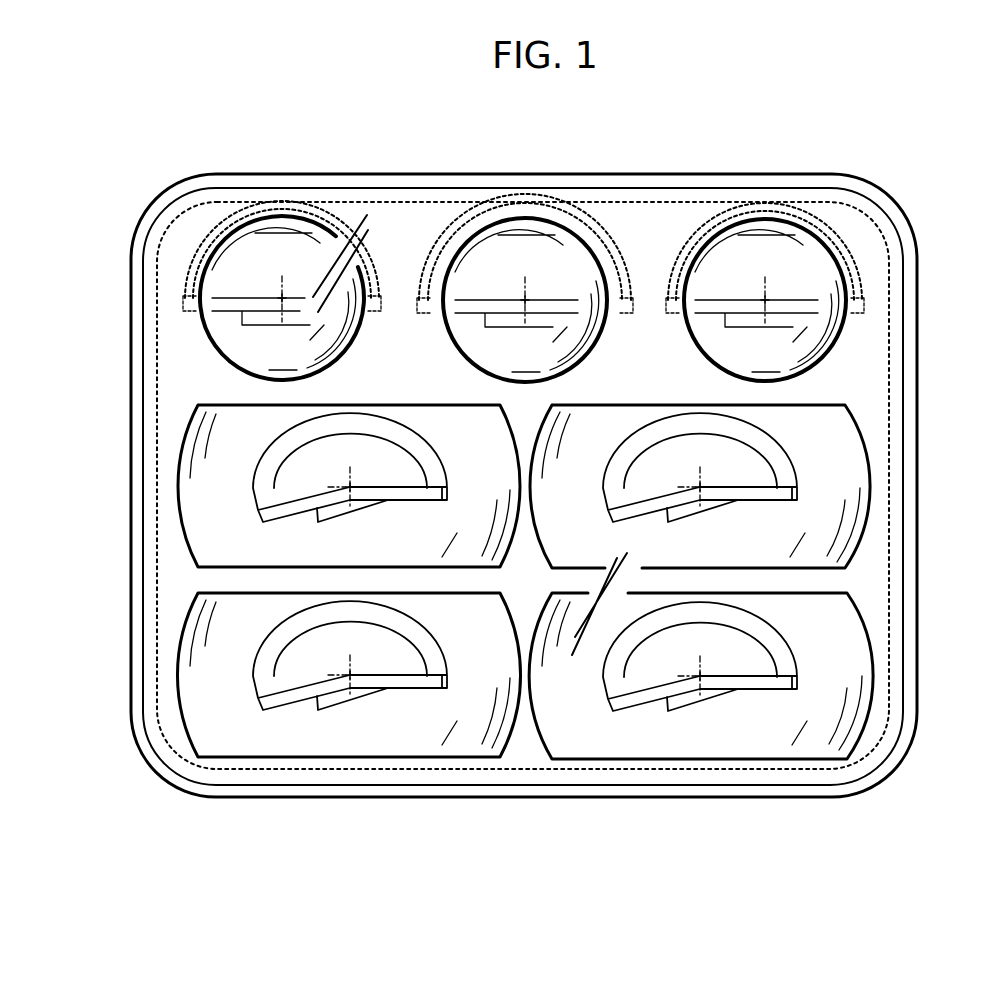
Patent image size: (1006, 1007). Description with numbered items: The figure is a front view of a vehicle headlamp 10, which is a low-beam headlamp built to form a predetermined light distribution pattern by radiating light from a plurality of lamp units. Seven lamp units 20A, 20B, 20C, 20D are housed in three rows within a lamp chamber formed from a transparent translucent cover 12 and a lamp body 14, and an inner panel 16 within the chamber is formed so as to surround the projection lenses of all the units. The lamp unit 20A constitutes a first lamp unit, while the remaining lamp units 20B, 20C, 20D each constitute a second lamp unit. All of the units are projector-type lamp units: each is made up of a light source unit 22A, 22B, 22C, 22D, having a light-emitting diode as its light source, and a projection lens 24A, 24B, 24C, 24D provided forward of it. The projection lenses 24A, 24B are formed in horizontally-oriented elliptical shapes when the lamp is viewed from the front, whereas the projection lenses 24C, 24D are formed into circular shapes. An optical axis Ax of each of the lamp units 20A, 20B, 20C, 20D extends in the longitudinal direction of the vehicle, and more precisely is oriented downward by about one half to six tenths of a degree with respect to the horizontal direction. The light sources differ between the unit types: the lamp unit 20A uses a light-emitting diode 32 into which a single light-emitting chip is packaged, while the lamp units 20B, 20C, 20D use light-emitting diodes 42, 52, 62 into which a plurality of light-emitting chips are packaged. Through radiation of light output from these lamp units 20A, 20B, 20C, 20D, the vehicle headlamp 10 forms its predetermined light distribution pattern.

The vehicle headlamp 10 is at (559, 455).
The transparent translucent cover 12 is at (778, 188).
The lamp body 14 is at (734, 175).
The inner panel 16 is at (863, 343).
The lamp unit 20A is at (533, 669).
The lamp unit 20B is at (534, 472).
The lamp unit 20C is at (485, 266).
The lamp unit 20D is at (565, 262).
The light source unit 22A is at (302, 712).
The light source unit 22B is at (296, 521).
The light source unit 22C is at (233, 322).
The light source unit 22D is at (473, 320).
The projection lens 24A is at (218, 693).
The projection lens 24B is at (218, 503).
The projection lens 24C is at (255, 235).
The projection lens 24D is at (580, 273).
The light-emitting diode 32 is at (351, 673).
The light-emitting diode 42 is at (351, 486).
The light-emitting diode 52 is at (284, 296).
The light-emitting diode 62 is at (527, 299).
The optical axis Ax is at (280, 296).